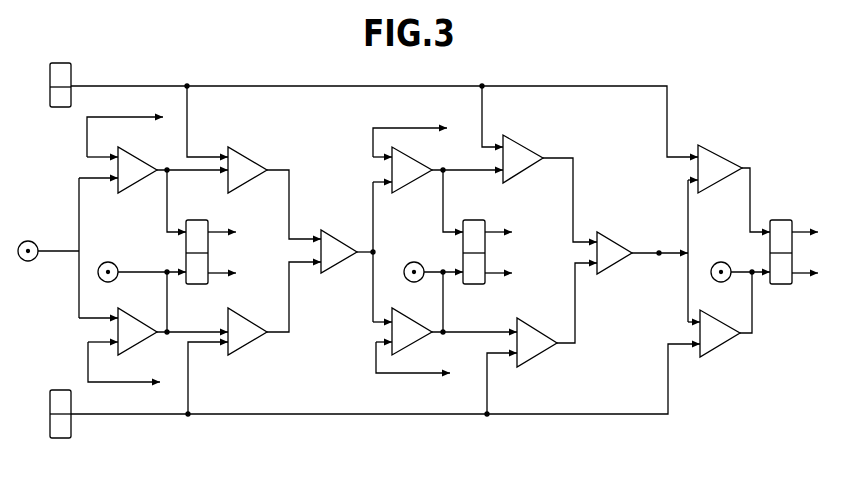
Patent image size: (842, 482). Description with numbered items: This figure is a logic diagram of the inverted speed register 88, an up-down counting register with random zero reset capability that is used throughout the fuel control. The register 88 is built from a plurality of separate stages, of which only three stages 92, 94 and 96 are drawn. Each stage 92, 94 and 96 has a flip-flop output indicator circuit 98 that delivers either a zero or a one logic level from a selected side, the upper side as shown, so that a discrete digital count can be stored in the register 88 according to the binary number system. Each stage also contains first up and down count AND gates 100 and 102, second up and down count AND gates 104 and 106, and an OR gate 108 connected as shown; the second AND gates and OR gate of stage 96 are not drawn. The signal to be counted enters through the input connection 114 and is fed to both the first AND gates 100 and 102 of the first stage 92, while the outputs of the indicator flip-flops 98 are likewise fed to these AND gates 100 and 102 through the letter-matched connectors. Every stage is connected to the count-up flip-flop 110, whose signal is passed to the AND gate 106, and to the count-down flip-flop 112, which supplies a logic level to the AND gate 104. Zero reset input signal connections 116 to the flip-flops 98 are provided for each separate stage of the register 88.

The inverted speed register 88 is at (612, 70).
The first stage 92 is at (190, 250).
The second stage 94 is at (552, 131).
The third stage 96 is at (745, 158).
The flip-flop output indicator circuit 98 is at (200, 207).
The first up count AND gate 100 is at (152, 134).
The first down count AND gate 102 is at (148, 335).
The second up count AND gate 104 is at (250, 147).
The second down count AND gate 106 is at (243, 350).
The OR gate 108 is at (350, 237).
The count-up flip-flop 110 is at (62, 438).
The count-down flip-flop 112 is at (70, 64).
The input connection 114 is at (33, 241).
The zero reset input signal connection 116 is at (122, 248).